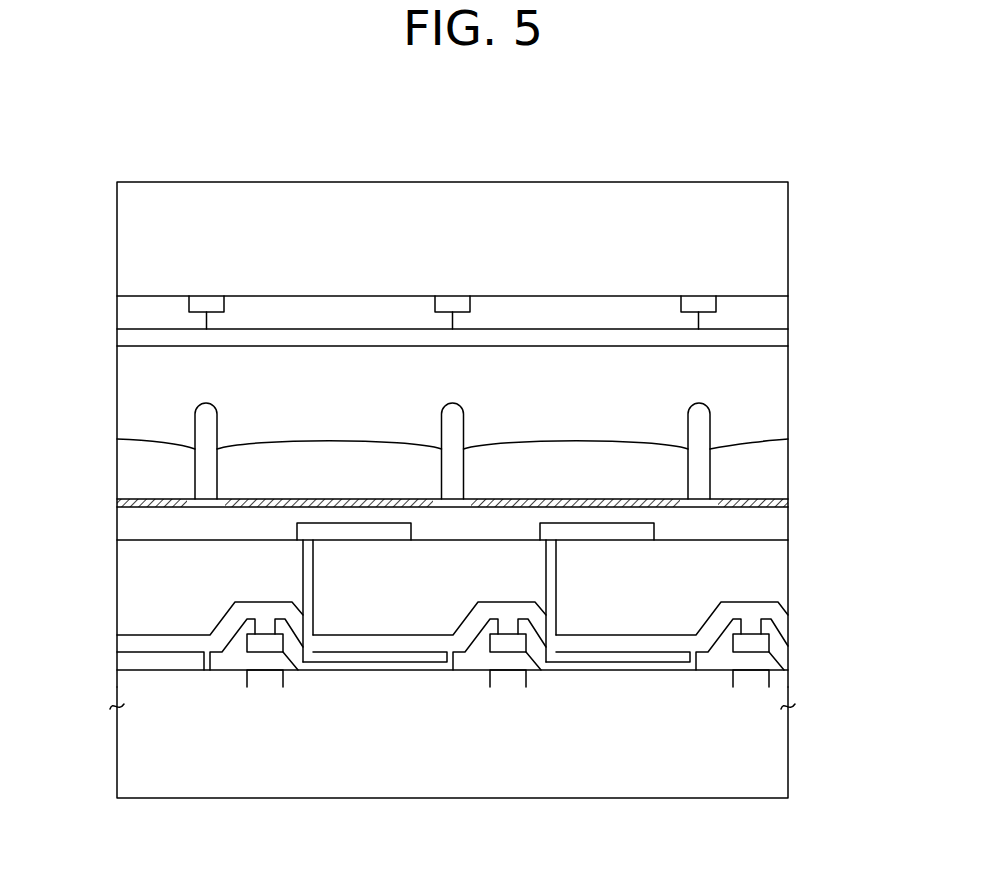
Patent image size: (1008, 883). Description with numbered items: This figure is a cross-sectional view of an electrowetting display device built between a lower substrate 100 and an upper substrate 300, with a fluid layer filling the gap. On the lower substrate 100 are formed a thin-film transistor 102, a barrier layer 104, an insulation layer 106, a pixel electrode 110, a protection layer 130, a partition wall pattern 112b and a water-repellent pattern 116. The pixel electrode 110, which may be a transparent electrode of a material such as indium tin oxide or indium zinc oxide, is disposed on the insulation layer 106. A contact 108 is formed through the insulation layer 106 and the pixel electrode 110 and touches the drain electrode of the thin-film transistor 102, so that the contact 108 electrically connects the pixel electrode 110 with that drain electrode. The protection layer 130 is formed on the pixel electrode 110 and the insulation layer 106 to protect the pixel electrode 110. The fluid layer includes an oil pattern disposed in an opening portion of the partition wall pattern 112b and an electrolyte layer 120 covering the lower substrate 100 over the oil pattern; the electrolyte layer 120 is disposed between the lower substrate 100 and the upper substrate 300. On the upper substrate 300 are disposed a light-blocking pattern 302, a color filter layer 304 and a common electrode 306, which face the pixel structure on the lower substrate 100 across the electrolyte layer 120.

The lower substrate 100 is at (788, 742).
The thin-film transistor 102 is at (262, 689).
The barrier layer 104 is at (788, 623).
The insulation layer 106 is at (788, 580).
The contact 108 is at (302, 577).
The pixel electrode 110 is at (633, 540).
The partition wall pattern 112b is at (195, 423).
The water-repellent pattern 116 is at (784, 505).
The electrolyte layer 120 is at (783, 384).
The protection layer 130 is at (783, 521).
The upper substrate 300 is at (783, 232).
The light-blocking pattern 302 is at (712, 296).
The color filter layer 304 is at (783, 313).
The common electrode 306 is at (783, 338).